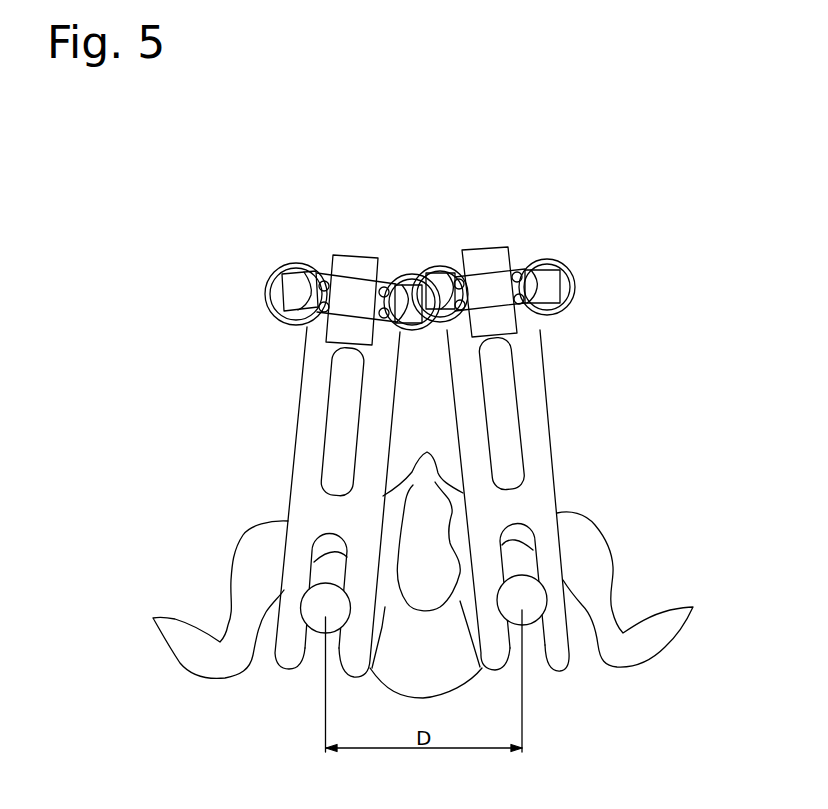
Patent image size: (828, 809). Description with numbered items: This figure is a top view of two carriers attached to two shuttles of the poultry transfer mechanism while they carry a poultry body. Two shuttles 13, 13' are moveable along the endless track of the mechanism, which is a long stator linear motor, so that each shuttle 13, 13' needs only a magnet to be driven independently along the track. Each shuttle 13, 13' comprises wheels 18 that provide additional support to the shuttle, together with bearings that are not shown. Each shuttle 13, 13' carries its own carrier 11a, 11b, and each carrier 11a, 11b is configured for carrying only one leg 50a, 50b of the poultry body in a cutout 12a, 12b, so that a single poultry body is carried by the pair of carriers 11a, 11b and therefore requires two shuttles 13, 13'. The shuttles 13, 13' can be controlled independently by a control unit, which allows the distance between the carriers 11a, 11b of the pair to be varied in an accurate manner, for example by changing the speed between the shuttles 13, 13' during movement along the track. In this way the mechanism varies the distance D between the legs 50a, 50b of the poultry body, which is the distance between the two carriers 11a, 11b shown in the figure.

The carrier 11a is at (325, 392).
The carrier 11b is at (525, 383).
The cutout 12a is at (328, 545).
The cutout 12b is at (517, 538).
The shuttle 13 is at (352, 279).
The shuttle 13' is at (489, 274).
The wheels 18 is at (278, 289).
The leg 50a is at (316, 607).
The leg 50b is at (527, 598).